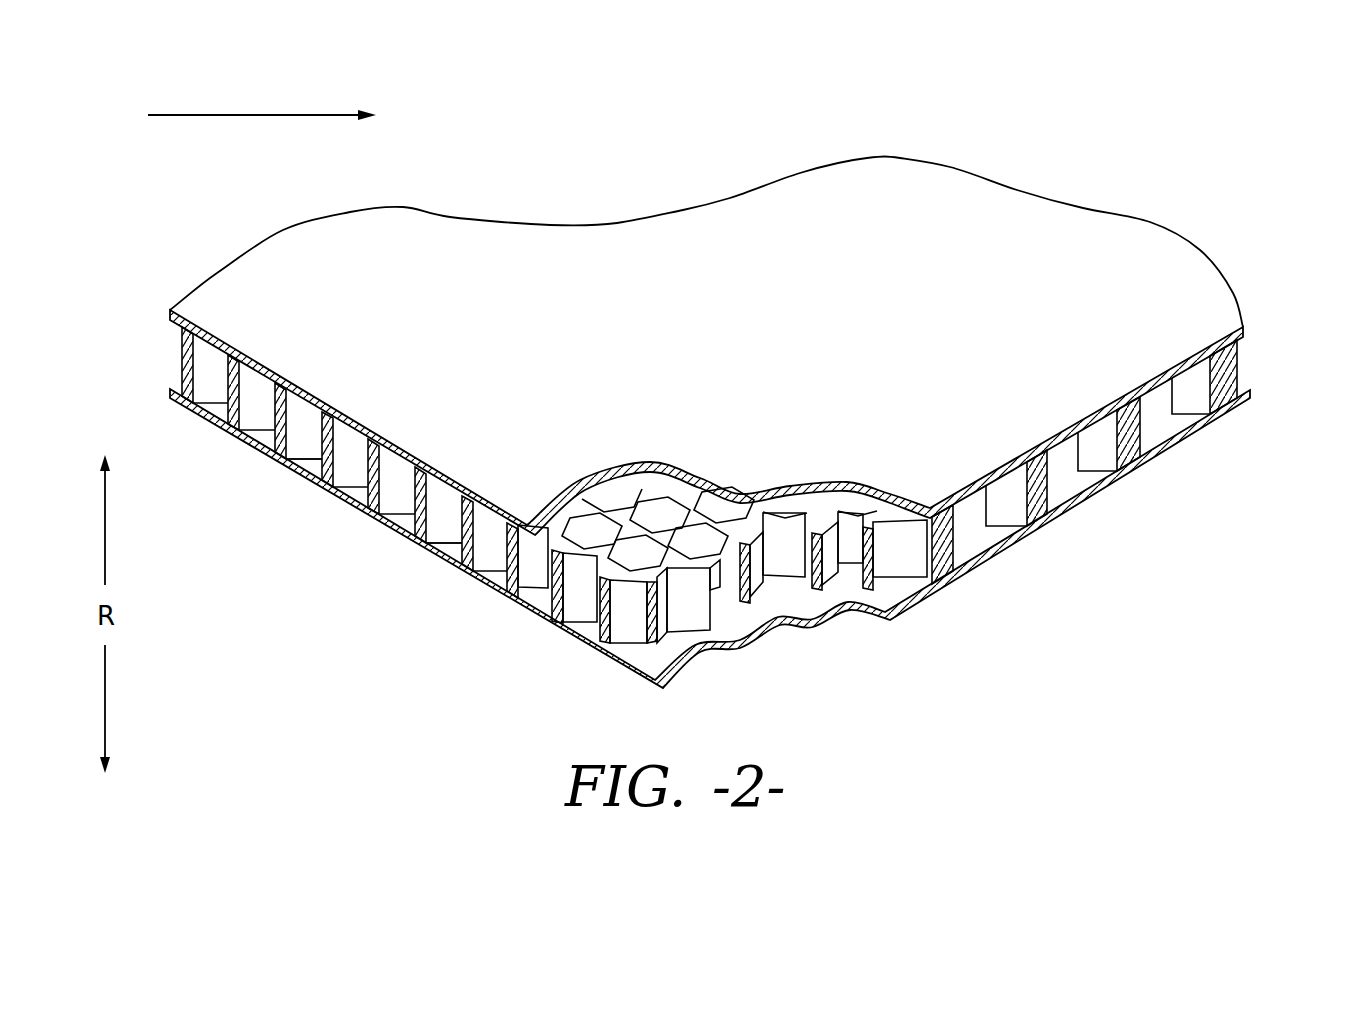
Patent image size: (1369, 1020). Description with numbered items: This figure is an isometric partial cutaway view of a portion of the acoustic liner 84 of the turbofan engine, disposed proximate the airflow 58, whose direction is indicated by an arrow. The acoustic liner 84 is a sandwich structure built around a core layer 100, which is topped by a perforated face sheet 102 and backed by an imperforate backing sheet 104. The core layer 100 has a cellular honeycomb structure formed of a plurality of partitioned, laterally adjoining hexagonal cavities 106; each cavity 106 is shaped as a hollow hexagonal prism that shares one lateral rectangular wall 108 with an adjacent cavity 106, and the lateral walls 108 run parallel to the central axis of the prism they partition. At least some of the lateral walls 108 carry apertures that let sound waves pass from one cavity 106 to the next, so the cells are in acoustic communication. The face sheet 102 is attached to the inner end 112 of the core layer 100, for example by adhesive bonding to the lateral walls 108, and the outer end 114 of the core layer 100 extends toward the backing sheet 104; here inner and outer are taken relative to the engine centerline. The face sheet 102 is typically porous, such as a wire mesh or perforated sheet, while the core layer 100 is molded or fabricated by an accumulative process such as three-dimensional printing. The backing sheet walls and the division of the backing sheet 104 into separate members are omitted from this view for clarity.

The airflow 58 is at (236, 113).
The acoustic liner 84 is at (1168, 144).
The core layer 100 is at (1227, 365).
The face sheet 102 is at (733, 228).
The backing sheet 104 is at (1187, 437).
The cavities 106 is at (662, 506).
The lateral walls 108 is at (910, 562).
The inner end 112 is at (303, 414).
The outer end 114 is at (444, 524).